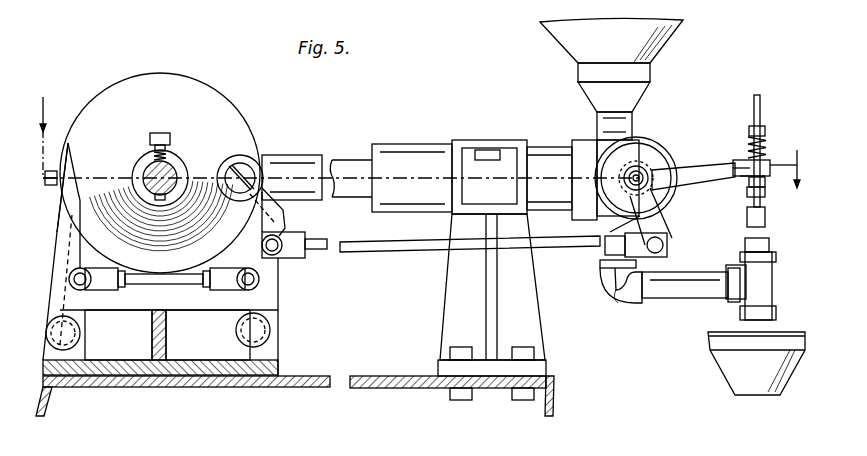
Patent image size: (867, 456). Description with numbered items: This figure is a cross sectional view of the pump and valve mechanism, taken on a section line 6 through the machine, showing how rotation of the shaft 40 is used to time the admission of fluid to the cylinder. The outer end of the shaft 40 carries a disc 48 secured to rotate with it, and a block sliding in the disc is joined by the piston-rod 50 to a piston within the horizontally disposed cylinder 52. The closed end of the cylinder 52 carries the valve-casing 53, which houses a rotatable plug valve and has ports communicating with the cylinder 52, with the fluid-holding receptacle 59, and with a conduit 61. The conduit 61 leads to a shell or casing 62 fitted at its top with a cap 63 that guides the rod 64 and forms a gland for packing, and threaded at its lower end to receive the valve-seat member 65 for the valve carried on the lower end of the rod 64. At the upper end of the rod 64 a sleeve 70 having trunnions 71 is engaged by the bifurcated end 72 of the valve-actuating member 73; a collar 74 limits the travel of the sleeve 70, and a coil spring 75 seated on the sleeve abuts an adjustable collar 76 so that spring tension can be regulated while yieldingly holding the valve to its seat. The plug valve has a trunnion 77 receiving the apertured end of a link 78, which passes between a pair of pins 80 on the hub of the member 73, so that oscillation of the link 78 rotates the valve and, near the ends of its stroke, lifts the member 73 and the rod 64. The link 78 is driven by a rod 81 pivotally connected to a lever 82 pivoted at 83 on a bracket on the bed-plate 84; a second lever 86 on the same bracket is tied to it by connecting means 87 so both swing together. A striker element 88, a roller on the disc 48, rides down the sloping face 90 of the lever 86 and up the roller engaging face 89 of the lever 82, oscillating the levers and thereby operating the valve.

The section line 6 is at (426, 142).
The shaft 40 is at (168, 168).
The disc 48 is at (237, 112).
The piston-rod 50 is at (338, 165).
The cylinder 52 is at (405, 152).
The valve-casing 53 is at (598, 142).
The fluid-holding receptacle 59 is at (684, 24).
The conduit 61 is at (603, 262).
The shell or casing 62 is at (772, 276).
The cap 63 is at (768, 246).
The rod 64 is at (761, 115).
The valve-seat member 65 is at (772, 318).
The sleeve 70 is at (770, 170).
The trunnions 71 is at (746, 180).
The bifurcated end 72 is at (745, 170).
The valve-actuating member 73 is at (702, 168).
The collar 74 is at (752, 192).
The coil spring 75 is at (766, 150).
The collar 76 is at (750, 128).
The trunnion 77 is at (645, 168).
The link 78 is at (668, 238).
The pins 80 is at (585, 212).
The rod 81 is at (412, 246).
The lever 82 is at (280, 300).
The pivot 83 is at (262, 328).
The bed-plate 84 is at (556, 384).
The second lever 86 is at (78, 298).
The connecting means 87 is at (176, 282).
The striker element 88 is at (246, 156).
The roller engaging face 89 is at (272, 198).
The sloping face 90 is at (78, 156).